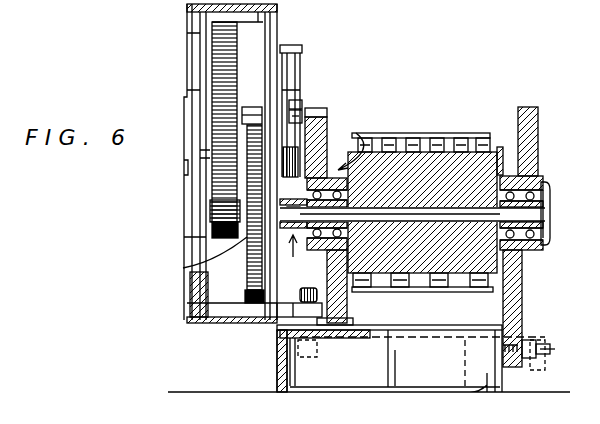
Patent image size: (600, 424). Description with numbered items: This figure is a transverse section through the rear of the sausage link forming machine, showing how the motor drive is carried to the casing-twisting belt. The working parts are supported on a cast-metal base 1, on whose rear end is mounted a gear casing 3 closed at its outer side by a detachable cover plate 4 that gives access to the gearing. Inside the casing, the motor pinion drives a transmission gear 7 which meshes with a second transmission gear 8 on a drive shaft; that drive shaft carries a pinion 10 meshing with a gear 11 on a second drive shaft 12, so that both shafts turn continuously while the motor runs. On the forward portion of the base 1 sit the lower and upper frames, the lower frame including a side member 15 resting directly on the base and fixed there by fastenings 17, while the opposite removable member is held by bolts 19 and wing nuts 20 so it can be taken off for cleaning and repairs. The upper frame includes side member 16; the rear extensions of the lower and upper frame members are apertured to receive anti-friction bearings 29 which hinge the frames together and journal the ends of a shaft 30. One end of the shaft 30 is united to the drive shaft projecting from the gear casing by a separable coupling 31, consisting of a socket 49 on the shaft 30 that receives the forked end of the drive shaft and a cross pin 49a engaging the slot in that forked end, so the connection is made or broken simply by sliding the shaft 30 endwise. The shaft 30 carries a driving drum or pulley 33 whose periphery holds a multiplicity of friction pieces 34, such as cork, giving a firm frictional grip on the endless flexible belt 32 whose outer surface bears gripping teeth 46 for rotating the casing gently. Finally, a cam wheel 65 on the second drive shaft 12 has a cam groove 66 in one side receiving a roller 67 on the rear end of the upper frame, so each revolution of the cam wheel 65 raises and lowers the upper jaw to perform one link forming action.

The base 1 is at (277, 375).
The gear casing 3 is at (222, 318).
The detachable cover plate 4 is at (190, 290).
The transmission gear 7 is at (246, 302).
The second transmission gear 8 is at (245, 268).
The pinion 10 is at (205, 221).
The gear 11 is at (200, 161).
The second drive shaft 12 is at (251, 122).
The lower frame member 15 is at (340, 328).
The upper frame member 16 is at (327, 113).
The fastenings 17 is at (315, 298).
The bolts 19 is at (480, 367).
The wing nuts 20 is at (545, 348).
The anti-friction bearings 29 is at (535, 181).
The shaft 30 is at (423, 216).
The separable coupling 31 is at (377, 152).
The endless flexible belt 32 is at (389, 141).
The driving drum or pulley 33 is at (525, 257).
The friction pieces 34 is at (447, 137).
The gripping teeth 46 is at (480, 128).
The socket 49 is at (301, 259).
The cross pin 49a is at (192, 258).
The cam wheel 65 is at (292, 47).
The cam groove 66 is at (297, 103).
The roller 67 is at (296, 115).